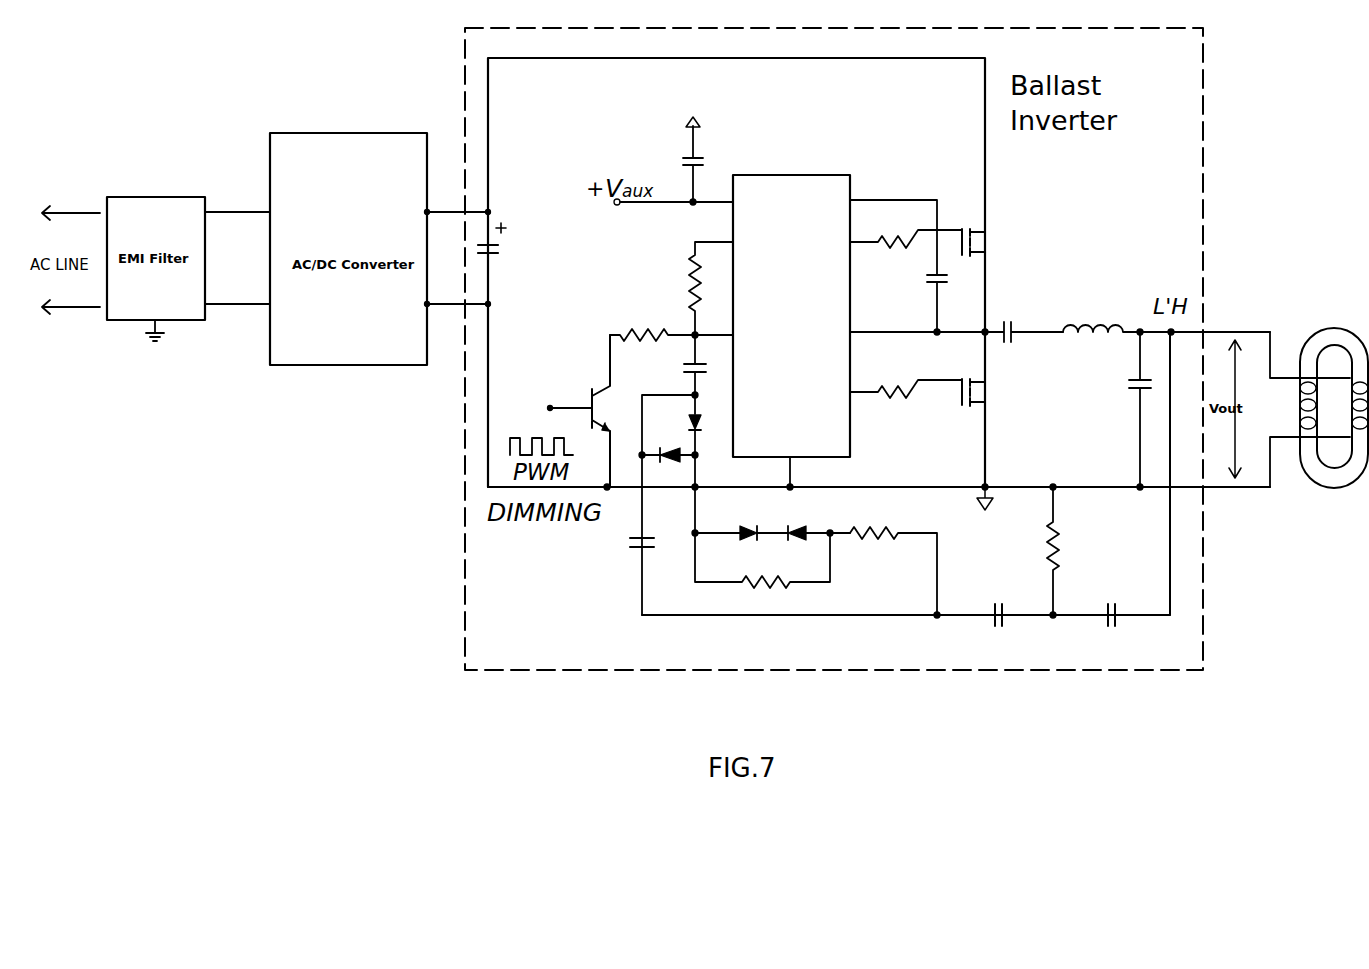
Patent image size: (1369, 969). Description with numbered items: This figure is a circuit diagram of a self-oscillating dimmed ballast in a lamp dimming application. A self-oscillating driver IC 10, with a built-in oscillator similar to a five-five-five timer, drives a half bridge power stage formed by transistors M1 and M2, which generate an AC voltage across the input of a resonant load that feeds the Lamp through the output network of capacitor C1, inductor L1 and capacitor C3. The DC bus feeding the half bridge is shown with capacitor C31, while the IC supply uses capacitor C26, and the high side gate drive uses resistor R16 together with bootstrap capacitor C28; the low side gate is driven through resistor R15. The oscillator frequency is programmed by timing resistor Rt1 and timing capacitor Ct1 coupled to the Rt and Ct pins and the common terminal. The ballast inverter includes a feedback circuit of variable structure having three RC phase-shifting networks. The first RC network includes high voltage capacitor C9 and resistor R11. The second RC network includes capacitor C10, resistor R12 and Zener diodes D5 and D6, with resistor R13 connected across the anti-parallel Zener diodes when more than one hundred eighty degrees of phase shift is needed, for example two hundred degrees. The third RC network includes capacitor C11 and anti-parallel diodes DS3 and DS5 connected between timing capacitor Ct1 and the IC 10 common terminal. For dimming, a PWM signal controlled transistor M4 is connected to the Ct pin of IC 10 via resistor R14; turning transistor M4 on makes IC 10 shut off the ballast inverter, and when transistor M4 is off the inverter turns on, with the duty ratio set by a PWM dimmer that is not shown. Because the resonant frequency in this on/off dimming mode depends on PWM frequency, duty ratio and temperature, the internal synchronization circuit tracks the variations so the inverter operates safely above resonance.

The self-oscillating driver IC 10 is at (800, 172).
The DC bus capacitor C31 is at (497, 258).
The capacitor C26 is at (703, 163).
The timing resistor Rt1 is at (685, 280).
The resistor R14 is at (618, 306).
The transistor M4 is at (583, 399).
The timing capacitor Ct1 is at (683, 364).
The anti-parallel diode DS3 is at (673, 425).
The anti-parallel diode DS5 is at (682, 466).
The Zener diode D5 is at (740, 519).
The Zener diode D6 is at (800, 522).
The resistor R12 is at (860, 545).
The resistor R13 is at (775, 592).
The capacitor C11 is at (628, 546).
The capacitor C10 is at (1016, 634).
The resistor R11 is at (1027, 551).
The high voltage capacitor C9 is at (1110, 630).
The capacitor C28 is at (925, 288).
The resistor R16 is at (894, 262).
The transistor M1 is at (992, 235).
The resistor R15 is at (898, 372).
The transistor M2 is at (992, 383).
The DC blocking capacitor C1 is at (1024, 319).
The resonant inductor L1 is at (1166, 313).
The resonant capacitor C3 is at (1128, 388).
The fluorescent lamp Lamp is at (1334, 392).